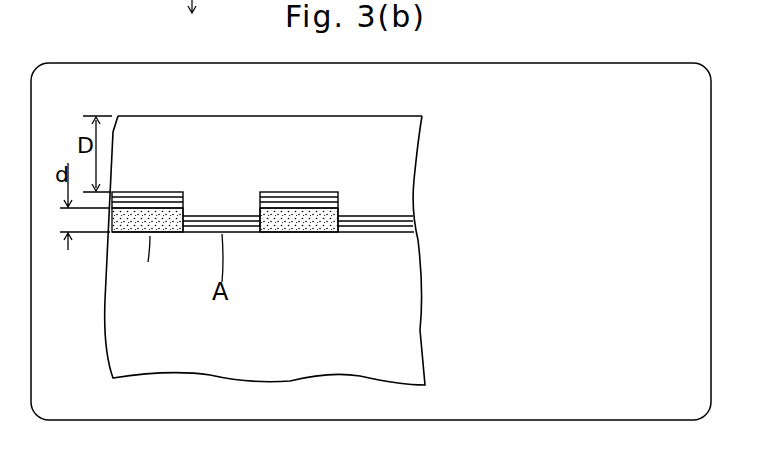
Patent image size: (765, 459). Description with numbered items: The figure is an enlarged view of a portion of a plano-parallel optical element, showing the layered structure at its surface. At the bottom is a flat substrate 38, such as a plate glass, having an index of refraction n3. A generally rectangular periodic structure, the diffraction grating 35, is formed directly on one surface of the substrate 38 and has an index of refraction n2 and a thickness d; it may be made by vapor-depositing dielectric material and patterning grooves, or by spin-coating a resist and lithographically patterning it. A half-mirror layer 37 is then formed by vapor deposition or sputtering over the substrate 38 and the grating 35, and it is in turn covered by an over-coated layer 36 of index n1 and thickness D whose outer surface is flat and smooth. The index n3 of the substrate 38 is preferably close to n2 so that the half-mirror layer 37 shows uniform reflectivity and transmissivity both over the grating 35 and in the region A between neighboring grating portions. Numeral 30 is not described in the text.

The semiconductor laser element 30 is at (400, 116).
The diffraction grating 35 is at (122, 222).
The over-coated layer 36 is at (412, 134).
The half-mirror layer 37 is at (421, 214).
The substrate 38 is at (418, 320).